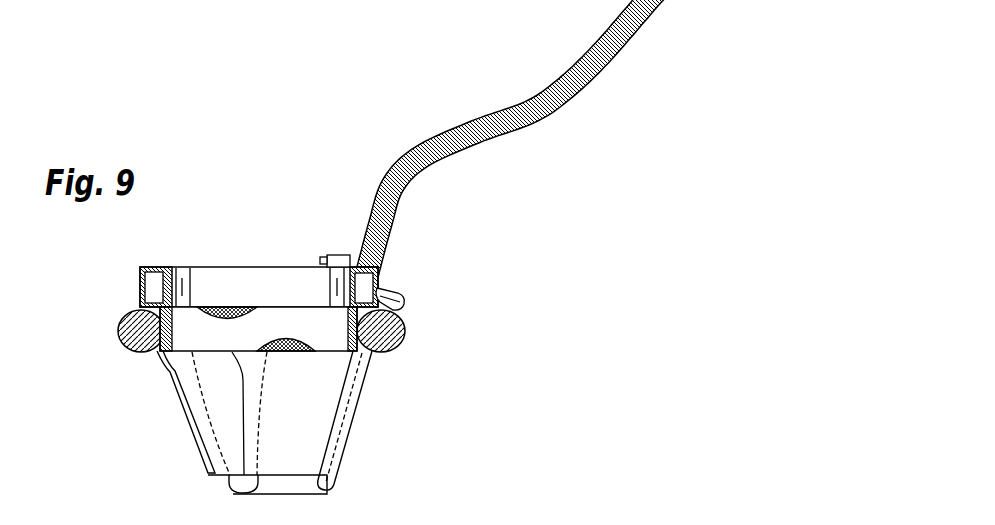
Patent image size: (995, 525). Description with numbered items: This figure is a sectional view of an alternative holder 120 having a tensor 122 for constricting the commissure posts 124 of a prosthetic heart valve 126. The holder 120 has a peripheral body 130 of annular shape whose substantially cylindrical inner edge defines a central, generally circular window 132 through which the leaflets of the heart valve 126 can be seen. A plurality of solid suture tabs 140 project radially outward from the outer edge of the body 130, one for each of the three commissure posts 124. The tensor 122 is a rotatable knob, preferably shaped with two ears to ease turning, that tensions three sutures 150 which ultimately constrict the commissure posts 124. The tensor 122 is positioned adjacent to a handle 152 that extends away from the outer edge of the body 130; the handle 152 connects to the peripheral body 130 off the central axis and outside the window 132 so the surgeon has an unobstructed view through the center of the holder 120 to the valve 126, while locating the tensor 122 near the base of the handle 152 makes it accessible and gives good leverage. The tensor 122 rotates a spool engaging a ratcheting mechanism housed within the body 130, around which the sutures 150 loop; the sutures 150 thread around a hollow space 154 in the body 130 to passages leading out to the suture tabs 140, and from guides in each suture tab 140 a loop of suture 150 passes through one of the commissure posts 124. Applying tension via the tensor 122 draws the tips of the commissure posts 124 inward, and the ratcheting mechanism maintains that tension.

The holder 120 is at (425, 131).
The tensor 122 is at (335, 255).
The commissure posts 124 is at (233, 485).
The prosthetic heart valve 126 is at (369, 399).
The peripheral body 130 is at (139, 283).
The window 132 is at (229, 276).
The suture tabs 140 is at (405, 303).
The sutures 150 is at (320, 411).
The handle 152 is at (603, 78).
The hollow space 154 is at (152, 295).